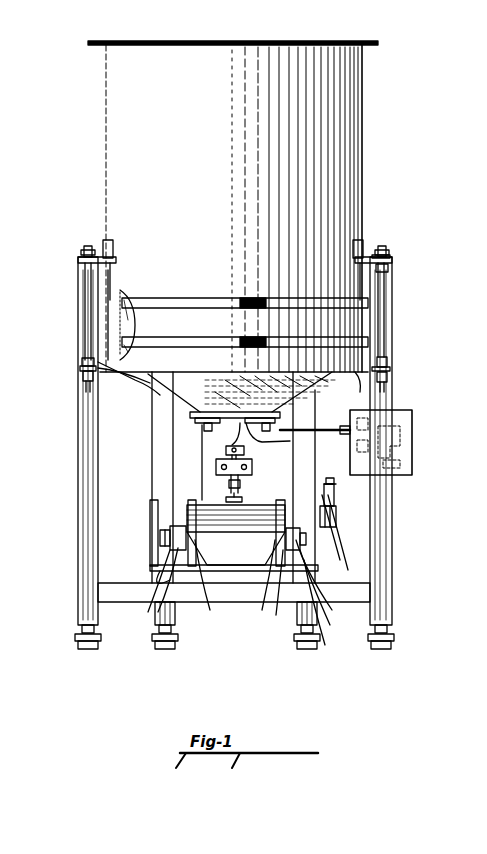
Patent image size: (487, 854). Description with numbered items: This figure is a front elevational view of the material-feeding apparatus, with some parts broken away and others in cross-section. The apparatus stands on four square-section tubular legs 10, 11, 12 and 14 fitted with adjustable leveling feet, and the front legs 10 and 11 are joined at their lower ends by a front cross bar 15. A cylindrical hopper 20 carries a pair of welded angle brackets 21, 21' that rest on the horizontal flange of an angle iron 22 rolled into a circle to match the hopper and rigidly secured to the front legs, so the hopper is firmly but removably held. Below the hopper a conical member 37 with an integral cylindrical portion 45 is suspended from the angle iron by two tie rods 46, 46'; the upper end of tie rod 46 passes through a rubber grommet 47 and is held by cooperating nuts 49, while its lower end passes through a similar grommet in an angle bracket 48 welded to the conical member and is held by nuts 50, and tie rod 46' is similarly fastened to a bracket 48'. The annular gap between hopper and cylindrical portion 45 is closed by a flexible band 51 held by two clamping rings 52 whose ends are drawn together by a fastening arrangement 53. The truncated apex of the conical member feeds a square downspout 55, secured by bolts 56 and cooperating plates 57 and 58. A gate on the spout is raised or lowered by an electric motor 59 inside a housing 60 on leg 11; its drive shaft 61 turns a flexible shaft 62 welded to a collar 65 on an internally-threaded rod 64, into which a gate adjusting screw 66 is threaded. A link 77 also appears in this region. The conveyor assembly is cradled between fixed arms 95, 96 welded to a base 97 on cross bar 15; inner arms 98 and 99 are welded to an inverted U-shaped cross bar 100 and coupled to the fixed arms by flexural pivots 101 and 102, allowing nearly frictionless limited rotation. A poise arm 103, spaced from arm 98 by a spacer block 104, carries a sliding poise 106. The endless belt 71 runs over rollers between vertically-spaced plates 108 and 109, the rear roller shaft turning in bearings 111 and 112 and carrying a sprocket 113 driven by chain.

The cylindrical hopper 20 is at (363, 172).
The tubular leg 10 is at (78, 335).
The tubular leg 11 is at (393, 292).
The angle iron 22 is at (114, 270).
The angle bracket 21 is at (342, 243).
The angle bracket 21' is at (125, 239).
The nuts 49 is at (388, 250).
The rubber grommet 47 is at (392, 256).
The nuts 50 is at (389, 362).
The tie rod 46 is at (404, 310).
The tie rod 46' is at (68, 317).
The angle bracket 48 is at (346, 386).
The bracket 48' is at (67, 381).
The cylindrical portion 45 is at (156, 385).
The conical member 37 is at (217, 477).
The clamping rings 52 is at (200, 298).
The flexible band 51 is at (232, 305).
The fastening arrangement 53 is at (252, 298).
The bolts 56 is at (232, 415).
The plate 58 is at (258, 415).
The plate 57 is at (266, 440).
The downspout 55 is at (202, 435).
The collar 65 is at (226, 451).
The valve block 77 is at (252, 467).
The internally-threaded rod 64 is at (229, 484).
The gate adjusting screw 66 is at (242, 496).
The housing 60 is at (412, 455).
The electric motor 59 is at (400, 432).
The flexible shaft 62 is at (305, 430).
The drive shaft 61 is at (343, 434).
The poise arm 103 is at (334, 500).
The poise 106 is at (336, 516).
The spacer block 104 is at (344, 532).
The flexural pivot 101 is at (325, 548).
The endless belt 71 is at (236, 565).
The arm 96 is at (170, 548).
The arm 99 is at (160, 532).
The flexural pivot 102 is at (150, 505).
The cross bar 100 is at (150, 570).
The front cross bar 15 is at (110, 592).
The tubular leg 12 is at (176, 622).
The tubular leg 14 is at (300, 645).
The sprocket 113 is at (139, 592).
The bearing 112 is at (150, 625).
The plate 109 is at (212, 585).
The plate 108 is at (264, 585).
The bearing 111 is at (276, 602).
The arm 98 is at (322, 579).
The arm 95 is at (327, 596).
The base 97 is at (327, 612).